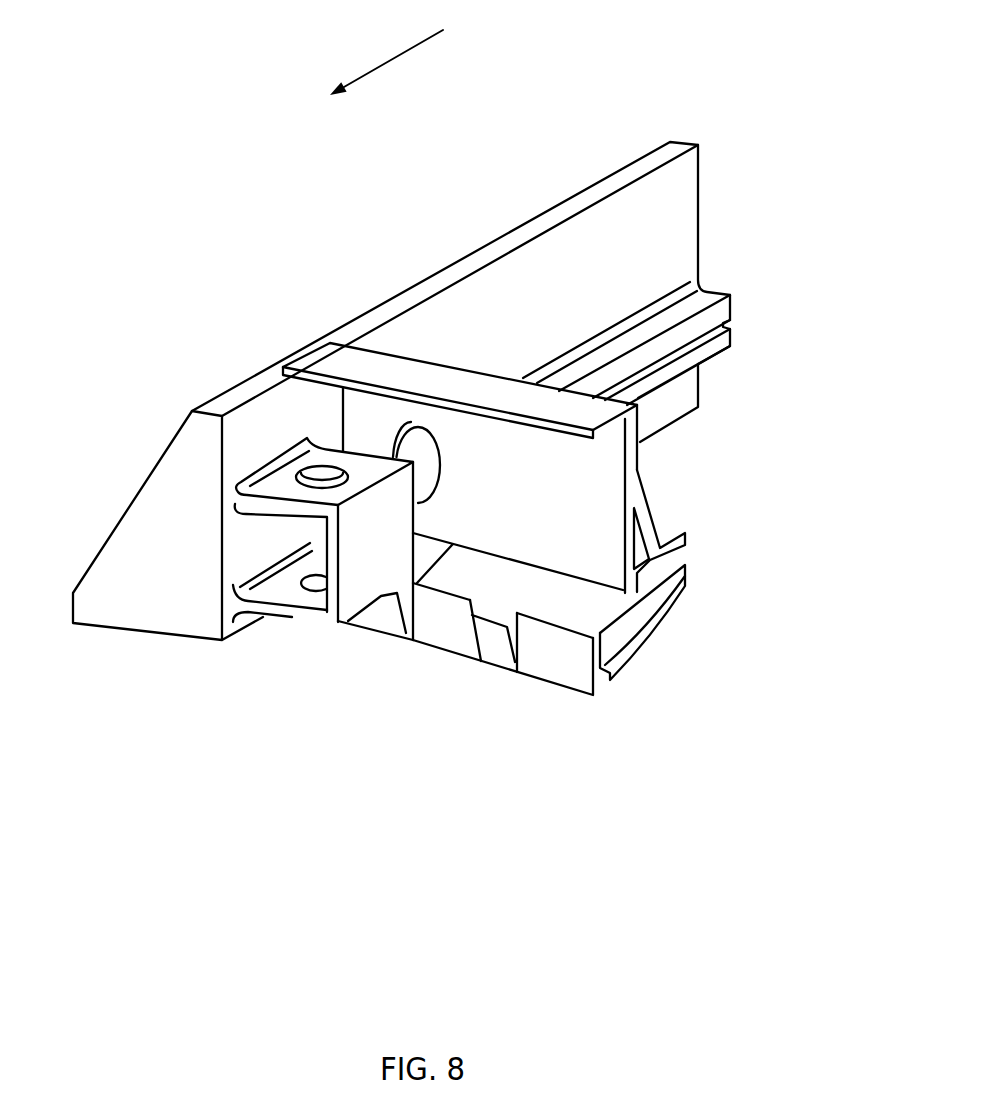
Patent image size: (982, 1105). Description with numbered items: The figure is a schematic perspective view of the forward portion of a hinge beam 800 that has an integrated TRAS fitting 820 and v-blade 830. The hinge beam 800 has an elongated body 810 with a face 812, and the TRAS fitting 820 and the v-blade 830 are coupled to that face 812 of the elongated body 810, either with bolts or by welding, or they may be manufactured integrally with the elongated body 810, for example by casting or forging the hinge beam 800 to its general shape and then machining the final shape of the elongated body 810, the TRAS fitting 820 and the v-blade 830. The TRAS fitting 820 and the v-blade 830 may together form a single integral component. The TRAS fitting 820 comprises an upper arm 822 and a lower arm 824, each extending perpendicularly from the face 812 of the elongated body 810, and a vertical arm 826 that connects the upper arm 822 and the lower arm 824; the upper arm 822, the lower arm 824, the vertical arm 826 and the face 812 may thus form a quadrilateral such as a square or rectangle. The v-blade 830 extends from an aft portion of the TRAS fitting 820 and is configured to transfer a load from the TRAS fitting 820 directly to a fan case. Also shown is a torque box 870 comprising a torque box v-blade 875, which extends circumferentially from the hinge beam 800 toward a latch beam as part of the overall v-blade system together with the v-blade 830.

The hinge beam 800 is at (232, 90).
The elongated body 810 is at (133, 500).
The face 812 is at (676, 219).
The TRAS fitting 820 is at (386, 689).
The upper arm 822 is at (348, 450).
The lower arm 824 is at (282, 617).
The vertical arm 826 is at (325, 543).
The v-blade 830 is at (362, 626).
The torque box 870 is at (640, 468).
The torque box v-blade 875 is at (558, 684).